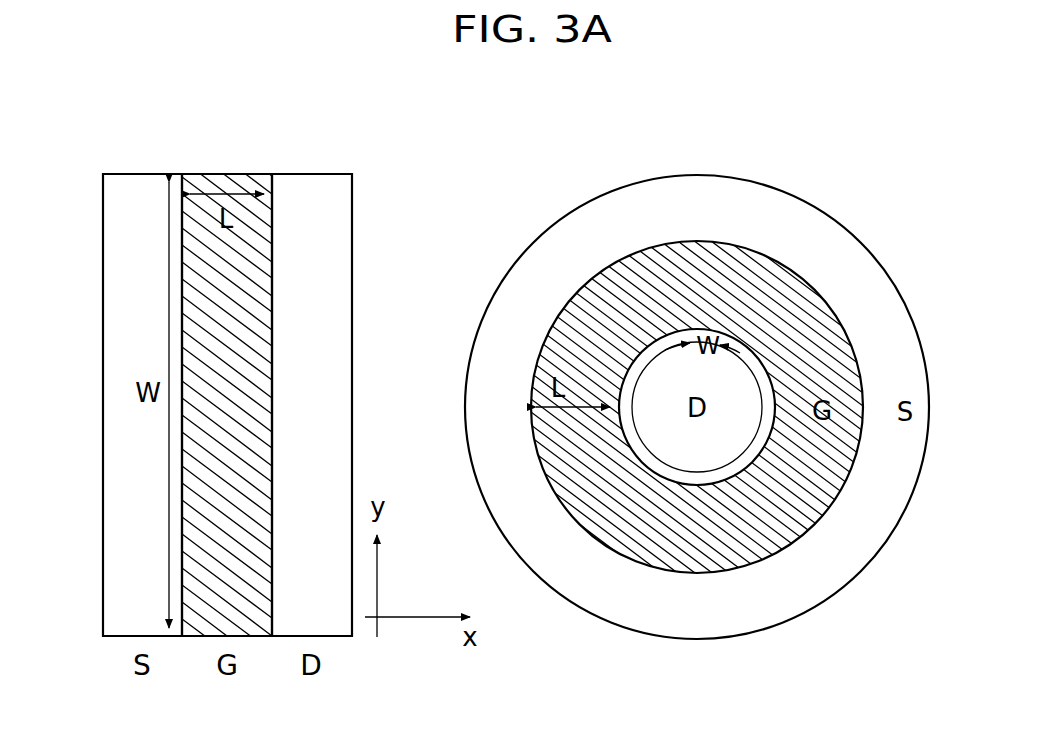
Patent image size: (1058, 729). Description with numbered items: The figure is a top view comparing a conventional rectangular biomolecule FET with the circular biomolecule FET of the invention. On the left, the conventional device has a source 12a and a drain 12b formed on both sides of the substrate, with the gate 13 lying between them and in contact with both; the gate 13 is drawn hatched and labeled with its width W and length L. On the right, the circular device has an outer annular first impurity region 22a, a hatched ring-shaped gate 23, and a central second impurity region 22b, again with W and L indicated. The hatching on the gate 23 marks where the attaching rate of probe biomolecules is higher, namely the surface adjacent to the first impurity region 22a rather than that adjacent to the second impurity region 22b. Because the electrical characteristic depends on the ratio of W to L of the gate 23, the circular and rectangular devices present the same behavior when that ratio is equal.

The source 12a is at (115, 482).
The drain 12b is at (338, 234).
The gate 13 is at (210, 315).
The first impurity region 22a is at (690, 612).
The second impurity region 22b is at (658, 375).
The gate 23 is at (577, 486).